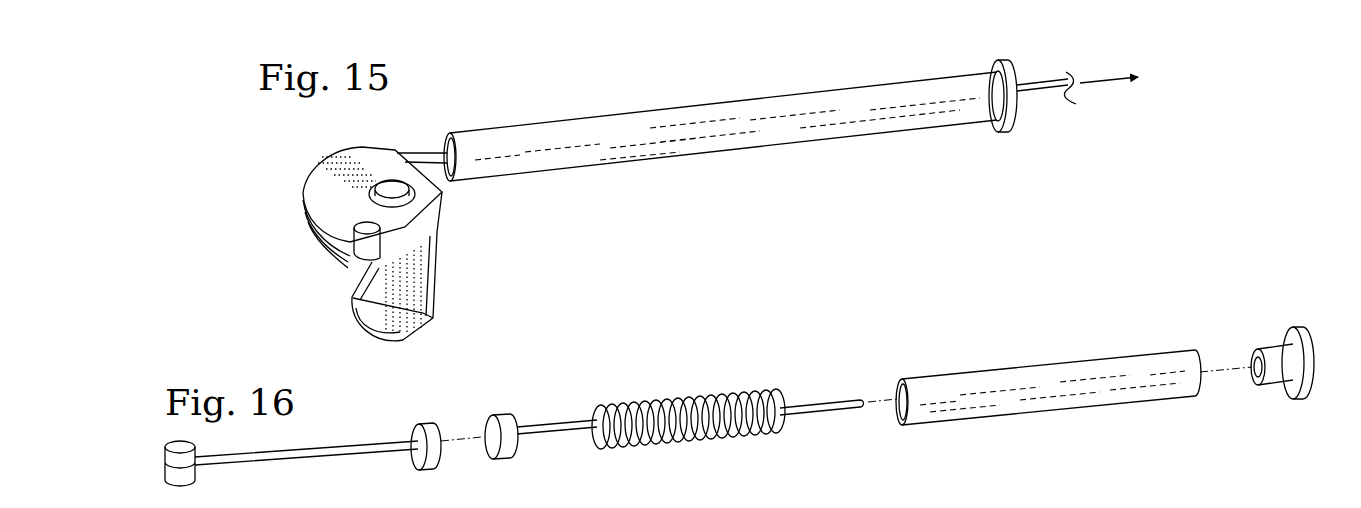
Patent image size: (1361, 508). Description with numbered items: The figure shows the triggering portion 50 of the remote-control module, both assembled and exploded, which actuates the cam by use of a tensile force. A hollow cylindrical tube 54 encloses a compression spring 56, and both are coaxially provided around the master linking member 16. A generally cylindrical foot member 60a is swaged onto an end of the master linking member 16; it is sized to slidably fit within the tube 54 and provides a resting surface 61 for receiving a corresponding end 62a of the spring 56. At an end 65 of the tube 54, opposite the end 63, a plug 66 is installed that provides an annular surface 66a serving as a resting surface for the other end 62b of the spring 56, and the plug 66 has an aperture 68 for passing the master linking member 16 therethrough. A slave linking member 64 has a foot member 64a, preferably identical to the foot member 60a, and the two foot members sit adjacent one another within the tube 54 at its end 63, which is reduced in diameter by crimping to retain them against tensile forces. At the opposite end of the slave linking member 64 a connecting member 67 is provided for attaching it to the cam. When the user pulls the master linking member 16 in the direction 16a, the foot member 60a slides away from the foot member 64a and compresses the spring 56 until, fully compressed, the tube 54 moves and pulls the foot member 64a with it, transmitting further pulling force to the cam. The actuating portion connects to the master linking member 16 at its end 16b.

In FIG. 15, the master linking member 16 is at (1050, 80).
In FIG. 16, the master linking member 16 is at (811, 399).
In FIG. 15, the direction of pulling force 16a is at (1100, 88).
In FIG. 15, the end of master linking member 16b is at (1056, 146).
In FIG. 15, the triggering portion 50 is at (818, 239).
In FIG. 16, the triggering portion 50 is at (1029, 276).
In FIG. 15, the hollow cylindrical tube 54 is at (838, 135).
In FIG. 16, the hollow cylindrical tube 54 is at (1032, 372).
In FIG. 16, the compression spring 56 is at (668, 399).
In FIG. 16, the foot member 60a is at (499, 413).
In FIG. 16, the resting surface 61 is at (520, 426).
In FIG. 16, the end of spring 62a is at (598, 397).
In FIG. 16, the other end of spring 62b is at (761, 374).
In FIG. 15, the end of tube 63 is at (489, 102).
In FIG. 16, the end of tube 63 is at (927, 354).
In FIG. 15, the slave linking member 64 is at (415, 150).
In FIG. 16, the slave linking member 64 is at (341, 446).
In FIG. 16, the foot member 64a is at (428, 471).
In FIG. 16, the end of tube 65 is at (1204, 339).
In FIG. 15, the plug 66 is at (1003, 130).
In FIG. 16, the plug 66 is at (1271, 329).
In FIG. 16, the annular surface 66a is at (1256, 349).
In FIG. 15, the connecting member 67 is at (360, 247).
In FIG. 16, the connecting member 67 is at (192, 493).
In FIG. 16, the aperture 68 is at (1255, 377).